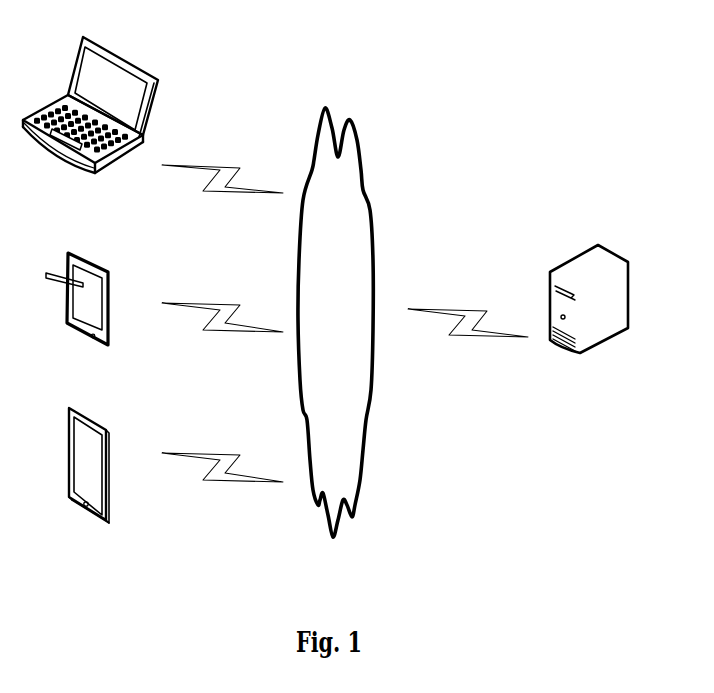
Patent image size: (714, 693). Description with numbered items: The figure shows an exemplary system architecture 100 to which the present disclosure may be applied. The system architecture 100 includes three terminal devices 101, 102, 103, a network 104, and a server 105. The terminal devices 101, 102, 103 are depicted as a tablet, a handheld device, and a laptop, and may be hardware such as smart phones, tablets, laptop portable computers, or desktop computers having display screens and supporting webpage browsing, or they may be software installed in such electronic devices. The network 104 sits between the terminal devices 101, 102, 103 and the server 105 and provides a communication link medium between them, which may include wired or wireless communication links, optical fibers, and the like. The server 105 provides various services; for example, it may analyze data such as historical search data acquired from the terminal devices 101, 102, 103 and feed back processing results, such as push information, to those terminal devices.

The system architecture 100 is at (515, 30).
The terminal device 101 is at (89, 483).
The terminal device 102 is at (77, 315).
The terminal device 103 is at (90, 122).
The network 104 is at (335, 322).
The server 105 is at (589, 320).